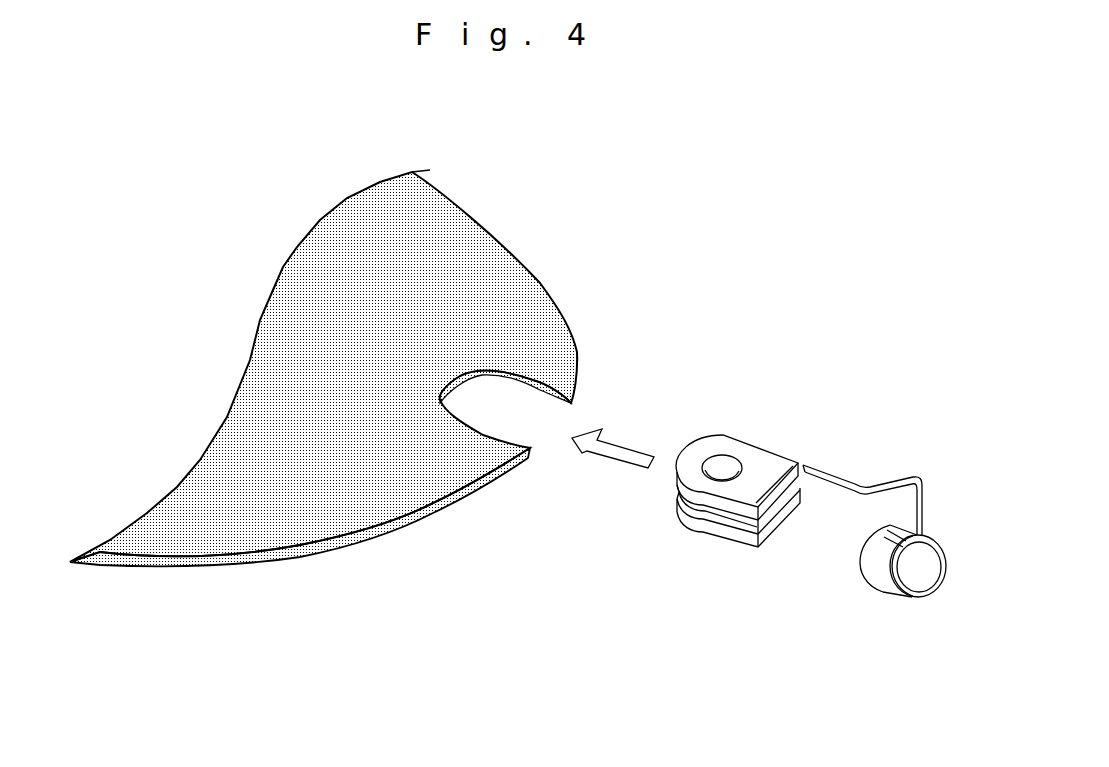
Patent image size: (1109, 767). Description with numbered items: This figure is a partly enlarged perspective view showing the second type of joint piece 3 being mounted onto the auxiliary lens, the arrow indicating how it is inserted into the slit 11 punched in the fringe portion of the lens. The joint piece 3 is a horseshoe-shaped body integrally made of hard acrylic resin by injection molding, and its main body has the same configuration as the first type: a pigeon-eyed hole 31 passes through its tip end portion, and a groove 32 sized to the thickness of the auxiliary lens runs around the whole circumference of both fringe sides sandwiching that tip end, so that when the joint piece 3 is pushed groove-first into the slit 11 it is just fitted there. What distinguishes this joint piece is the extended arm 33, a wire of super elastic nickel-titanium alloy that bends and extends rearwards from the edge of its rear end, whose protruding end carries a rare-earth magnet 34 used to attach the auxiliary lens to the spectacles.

The slit 11 is at (508, 408).
The joint piece 3 is at (757, 476).
The pigeon-eyed hole 31 is at (717, 470).
The groove 32 is at (731, 517).
The extended arm 33 is at (880, 480).
The magnet 34 is at (857, 551).